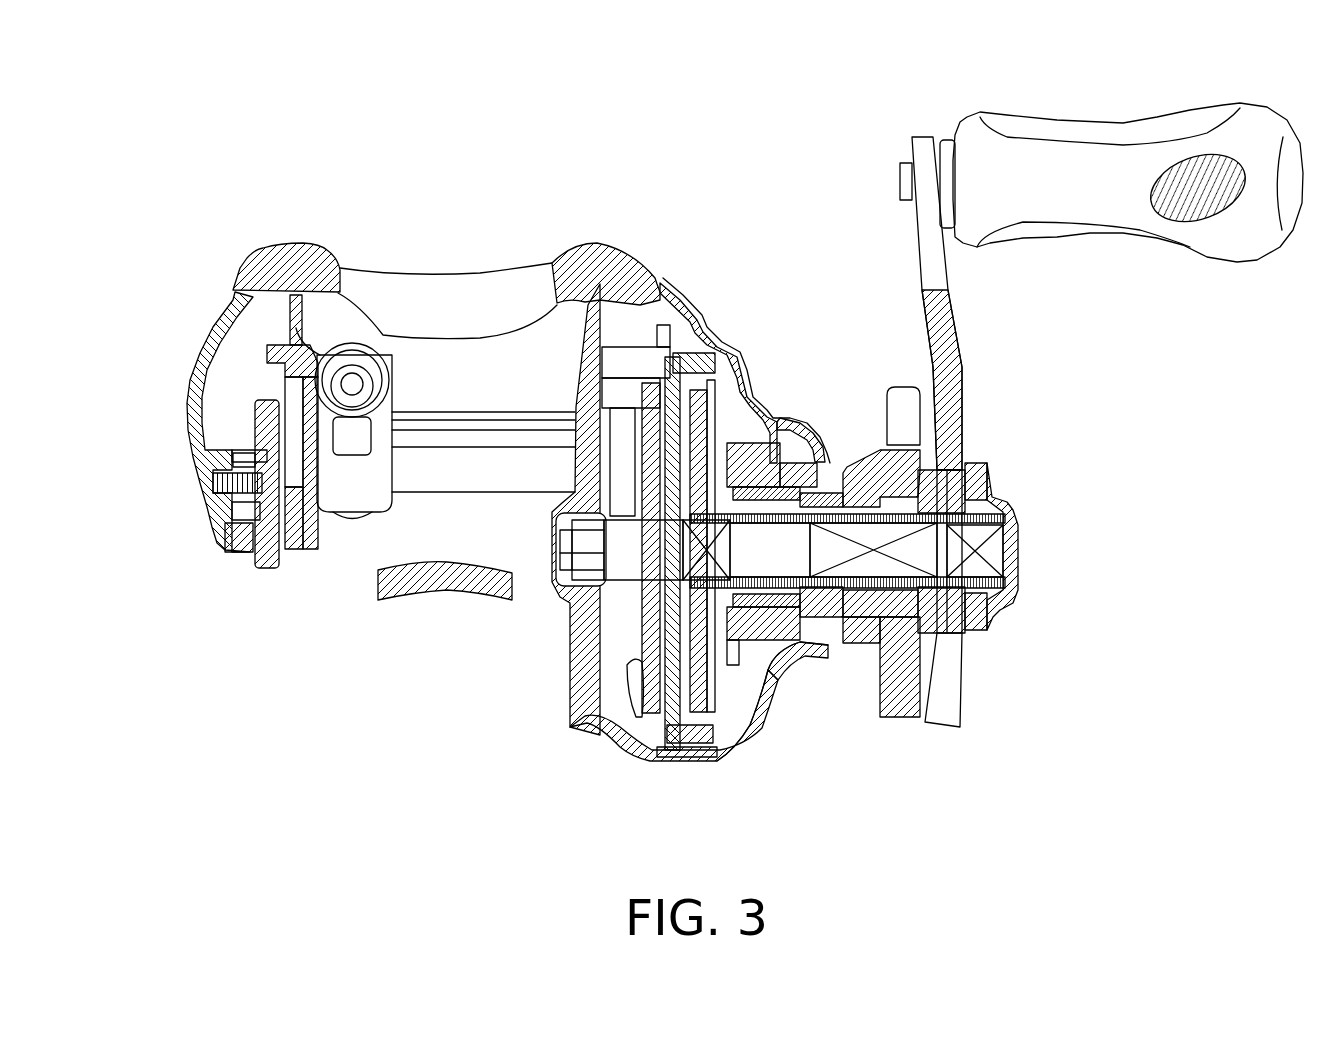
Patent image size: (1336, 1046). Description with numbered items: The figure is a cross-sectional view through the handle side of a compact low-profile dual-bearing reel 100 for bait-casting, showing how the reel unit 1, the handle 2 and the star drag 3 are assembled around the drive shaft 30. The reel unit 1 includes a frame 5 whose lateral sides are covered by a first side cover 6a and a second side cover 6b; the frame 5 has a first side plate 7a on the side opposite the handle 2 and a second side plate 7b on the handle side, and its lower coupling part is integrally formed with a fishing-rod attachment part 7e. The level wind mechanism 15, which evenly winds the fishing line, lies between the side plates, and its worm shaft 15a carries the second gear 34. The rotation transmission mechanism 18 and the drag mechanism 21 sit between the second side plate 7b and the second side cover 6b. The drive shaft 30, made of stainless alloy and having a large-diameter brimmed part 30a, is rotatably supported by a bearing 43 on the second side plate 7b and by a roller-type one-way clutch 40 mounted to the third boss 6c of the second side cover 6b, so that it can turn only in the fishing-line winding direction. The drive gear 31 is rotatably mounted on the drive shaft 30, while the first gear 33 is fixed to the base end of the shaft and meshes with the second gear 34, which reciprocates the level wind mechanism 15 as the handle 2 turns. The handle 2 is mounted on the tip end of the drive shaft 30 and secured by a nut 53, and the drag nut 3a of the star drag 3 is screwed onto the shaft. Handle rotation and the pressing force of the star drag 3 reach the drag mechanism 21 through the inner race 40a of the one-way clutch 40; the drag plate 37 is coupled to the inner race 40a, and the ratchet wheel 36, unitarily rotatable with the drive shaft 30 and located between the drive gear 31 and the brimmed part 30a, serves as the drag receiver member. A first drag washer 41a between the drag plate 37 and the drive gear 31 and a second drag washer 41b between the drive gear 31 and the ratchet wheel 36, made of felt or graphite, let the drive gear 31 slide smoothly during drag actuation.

The dual-bearing reel 100 is at (1100, 408).
The reel unit 1 is at (706, 200).
The handle 2 is at (942, 280).
The star drag 3 is at (897, 400).
The drag nut 3a is at (875, 470).
The frame 5 is at (643, 240).
The first side cover 6a is at (205, 336).
The second side cover 6b is at (716, 334).
The third boss 6c is at (788, 436).
The first side plate 7a is at (297, 553).
The second side plate 7b is at (572, 724).
The fishing-rod attachment part 7e is at (432, 593).
The level wind mechanism 15 is at (353, 343).
The worm shaft 15a is at (435, 565).
The rotation transmission mechanism 18 is at (693, 750).
The drag mechanism 21 is at (733, 713).
The drive shaft 30 is at (1003, 528).
The brimmed part 30a is at (640, 553).
The drive gear 31 is at (677, 737).
The first gear 33 is at (617, 622).
The second gear 34 is at (623, 395).
The ratchet wheel 36 is at (633, 687).
The drag plate 37 is at (717, 757).
The one-way clutch 40 is at (820, 653).
The inner race 40a is at (782, 613).
The first drag washer 41a is at (710, 775).
The second drag washer 41b is at (667, 733).
The bearing 43 is at (573, 493).
The nut 53 is at (1000, 493).